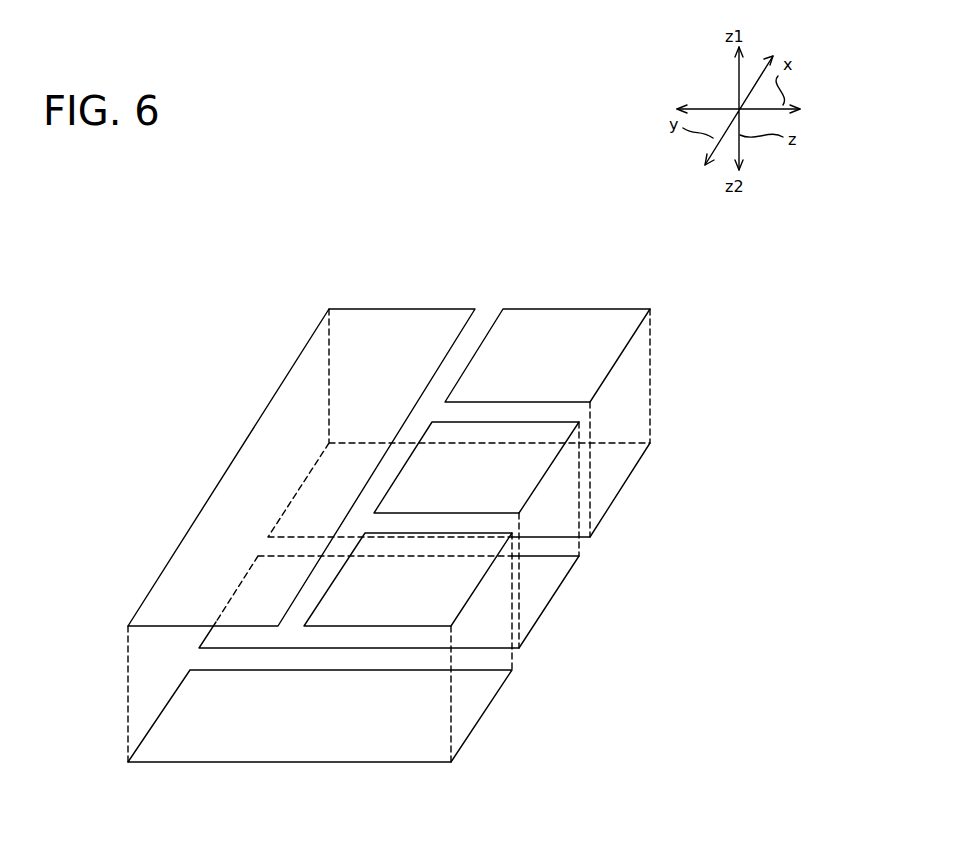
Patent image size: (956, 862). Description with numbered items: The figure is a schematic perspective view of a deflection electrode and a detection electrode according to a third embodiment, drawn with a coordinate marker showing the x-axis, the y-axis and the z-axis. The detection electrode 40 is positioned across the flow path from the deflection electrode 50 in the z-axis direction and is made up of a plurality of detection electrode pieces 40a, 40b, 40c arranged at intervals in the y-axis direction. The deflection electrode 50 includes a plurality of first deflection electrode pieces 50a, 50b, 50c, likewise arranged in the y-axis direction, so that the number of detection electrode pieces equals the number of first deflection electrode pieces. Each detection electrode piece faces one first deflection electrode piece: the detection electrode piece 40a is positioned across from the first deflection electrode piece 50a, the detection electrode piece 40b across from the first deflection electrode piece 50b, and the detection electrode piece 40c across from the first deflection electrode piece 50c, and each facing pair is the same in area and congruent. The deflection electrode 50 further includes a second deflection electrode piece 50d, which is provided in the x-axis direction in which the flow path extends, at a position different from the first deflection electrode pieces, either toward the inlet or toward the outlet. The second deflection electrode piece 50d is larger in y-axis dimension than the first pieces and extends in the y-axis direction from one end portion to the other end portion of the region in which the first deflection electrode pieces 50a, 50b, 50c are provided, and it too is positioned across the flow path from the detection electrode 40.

The detection electrode 40 is at (455, 535).
The detection electrode piece 40a is at (487, 708).
The detection electrode piece 40b is at (561, 588).
The detection electrode piece 40c is at (614, 503).
The deflection electrode 50 is at (482, 446).
The first deflection electrode piece 50a is at (488, 570).
The first deflection electrode piece 50b is at (543, 478).
The first deflection electrode piece 50c is at (610, 372).
The second deflection electrode piece 50d is at (417, 309).